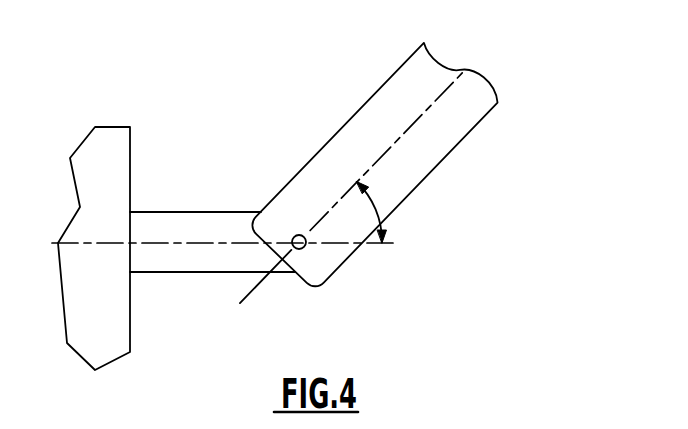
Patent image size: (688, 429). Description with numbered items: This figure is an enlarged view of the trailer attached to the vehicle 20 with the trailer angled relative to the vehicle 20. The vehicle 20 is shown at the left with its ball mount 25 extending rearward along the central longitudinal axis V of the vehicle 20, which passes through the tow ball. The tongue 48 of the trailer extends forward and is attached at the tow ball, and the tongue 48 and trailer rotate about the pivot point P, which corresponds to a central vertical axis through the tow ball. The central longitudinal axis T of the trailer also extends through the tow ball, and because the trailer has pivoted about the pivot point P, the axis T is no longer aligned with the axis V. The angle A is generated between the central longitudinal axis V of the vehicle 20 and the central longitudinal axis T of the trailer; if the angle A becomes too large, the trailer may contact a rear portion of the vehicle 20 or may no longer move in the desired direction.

The vehicle 20 is at (117, 154).
The ball mount 25 is at (203, 227).
The tongue 48 is at (452, 130).
The central longitudinal axis of the vehicle V is at (219, 242).
The central longitudinal axis of the trailer T is at (412, 123).
The angle A is at (392, 200).
The pivot point P is at (305, 249).